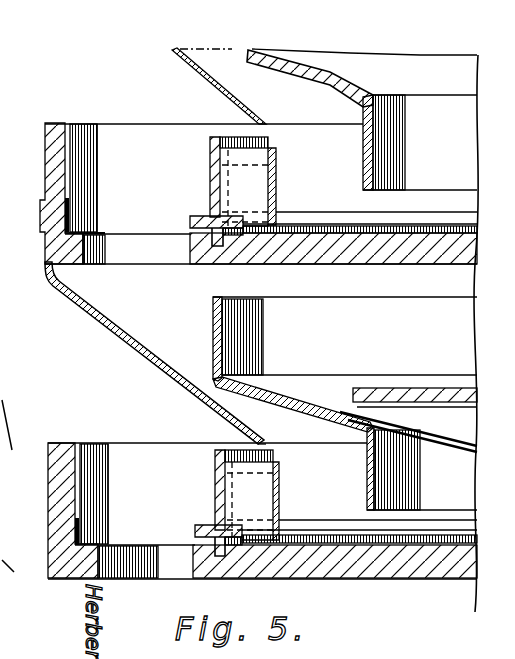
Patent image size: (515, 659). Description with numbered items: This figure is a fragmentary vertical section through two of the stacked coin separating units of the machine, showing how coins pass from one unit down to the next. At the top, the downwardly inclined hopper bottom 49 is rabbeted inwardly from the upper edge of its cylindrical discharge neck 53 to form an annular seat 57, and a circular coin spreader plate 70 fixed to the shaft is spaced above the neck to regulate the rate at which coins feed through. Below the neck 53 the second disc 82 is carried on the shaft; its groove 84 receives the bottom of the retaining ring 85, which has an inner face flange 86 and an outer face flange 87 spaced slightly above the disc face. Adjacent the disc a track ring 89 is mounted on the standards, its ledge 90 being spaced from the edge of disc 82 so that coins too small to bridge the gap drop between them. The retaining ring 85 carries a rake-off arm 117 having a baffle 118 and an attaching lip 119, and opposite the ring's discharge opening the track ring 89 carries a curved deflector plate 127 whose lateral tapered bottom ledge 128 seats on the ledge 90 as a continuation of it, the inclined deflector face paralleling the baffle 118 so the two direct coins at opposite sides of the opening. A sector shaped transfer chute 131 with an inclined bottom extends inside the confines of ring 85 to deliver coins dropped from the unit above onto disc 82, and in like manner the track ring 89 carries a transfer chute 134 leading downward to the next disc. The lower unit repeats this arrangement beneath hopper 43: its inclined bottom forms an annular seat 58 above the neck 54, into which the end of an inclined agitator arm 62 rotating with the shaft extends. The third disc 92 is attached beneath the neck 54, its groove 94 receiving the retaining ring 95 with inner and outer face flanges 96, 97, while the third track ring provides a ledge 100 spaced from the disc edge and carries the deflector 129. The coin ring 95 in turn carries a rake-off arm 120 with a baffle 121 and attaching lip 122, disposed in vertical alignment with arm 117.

The coin receiving hopper 43 is at (223, 338).
The hopper bottom 49 is at (290, 76).
The discharge neck 53 is at (372, 168).
The discharge neck 54 is at (378, 485).
The annular seat 57 is at (332, 77).
The annular seat 58 is at (340, 408).
The agitator arm 62 is at (400, 413).
The coin spreader plate 70 is at (398, 375).
The second disc 82 is at (377, 262).
The groove 84 is at (218, 248).
The retaining ring 85 is at (213, 170).
The inner face flange 86 is at (237, 222).
The outer face flange 87 is at (194, 216).
The track ring 89 is at (46, 170).
The ledge 90 is at (107, 257).
The third disc 92 is at (423, 574).
The groove 94 is at (214, 560).
The retaining ring 95 is at (215, 487).
The inner face flange 96 is at (237, 532).
The outer face flange 97 is at (201, 528).
The ledge 100 is at (120, 578).
The rake-off arm 117 is at (277, 190).
The baffle 118 is at (277, 212).
The attaching lip 119 is at (276, 165).
The rake-off arm 120 is at (279, 499).
The baffle 121 is at (279, 511).
The attaching lip 122 is at (279, 473).
The deflector plate 127 is at (70, 214).
The tapered bottom ledge 128 is at (103, 236).
The deflector 129 is at (80, 533).
The transfer chute 131 is at (222, 91).
The transfer chute 134 is at (143, 343).